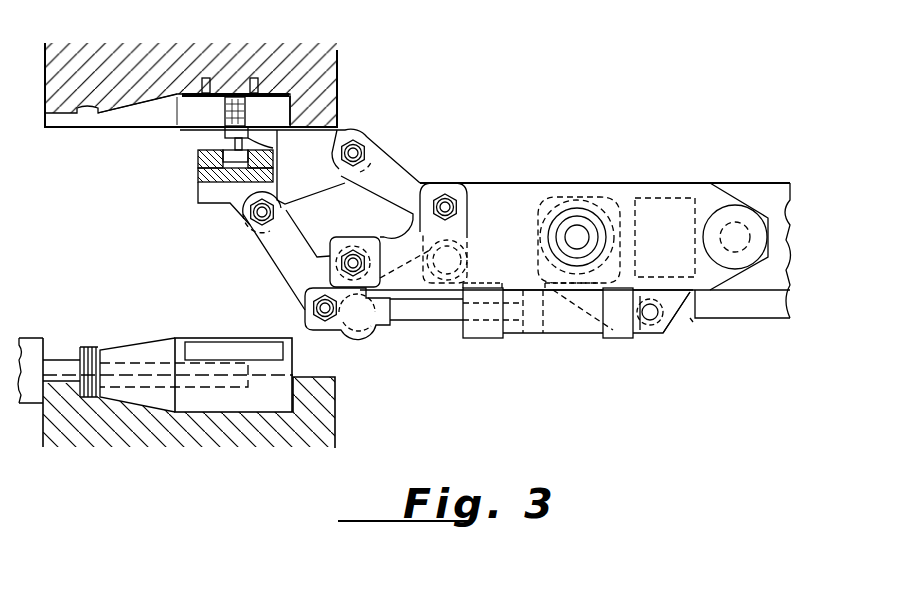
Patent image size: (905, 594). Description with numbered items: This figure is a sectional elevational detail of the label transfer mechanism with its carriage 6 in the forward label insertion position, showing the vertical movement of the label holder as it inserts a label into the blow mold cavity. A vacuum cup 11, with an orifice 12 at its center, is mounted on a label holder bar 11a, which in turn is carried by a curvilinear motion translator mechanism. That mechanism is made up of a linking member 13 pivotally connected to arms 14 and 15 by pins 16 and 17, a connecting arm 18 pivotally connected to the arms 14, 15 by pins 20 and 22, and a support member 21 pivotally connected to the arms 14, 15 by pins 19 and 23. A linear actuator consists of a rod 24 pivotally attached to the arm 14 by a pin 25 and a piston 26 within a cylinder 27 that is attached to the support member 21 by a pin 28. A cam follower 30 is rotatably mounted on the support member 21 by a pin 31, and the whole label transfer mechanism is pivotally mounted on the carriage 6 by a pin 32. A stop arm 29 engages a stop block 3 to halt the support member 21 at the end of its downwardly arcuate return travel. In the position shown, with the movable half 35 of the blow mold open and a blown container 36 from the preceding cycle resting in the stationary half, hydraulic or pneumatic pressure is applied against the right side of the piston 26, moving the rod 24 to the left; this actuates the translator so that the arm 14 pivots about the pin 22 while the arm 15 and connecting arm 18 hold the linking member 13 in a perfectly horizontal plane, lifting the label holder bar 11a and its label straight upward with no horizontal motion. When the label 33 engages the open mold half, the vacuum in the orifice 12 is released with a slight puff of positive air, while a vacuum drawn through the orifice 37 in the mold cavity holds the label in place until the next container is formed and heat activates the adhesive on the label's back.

The stop block 3 is at (657, 208).
The carriage 6 is at (788, 320).
The vacuum cup 11 is at (225, 100).
The label holder bar 11a is at (220, 166).
The orifice 12 is at (226, 150).
The linking member 13 is at (320, 146).
The arm 14 is at (273, 247).
The arm 15 is at (388, 183).
The pin 16 is at (260, 214).
The pin 17 is at (356, 152).
The connecting arm 18 is at (408, 305).
The pin 19 is at (353, 255).
The pin 20 is at (453, 262).
The support member 21 is at (492, 198).
The pin 22 is at (357, 324).
The pin 23 is at (447, 204).
The rod 24 is at (445, 318).
The pin 25 is at (316, 308).
The piston 26 is at (520, 335).
The cylinder 27 is at (557, 318).
The pin 28 is at (652, 314).
The stop arm 29 is at (691, 318).
The cam follower 30 is at (721, 212).
The pin 31 is at (738, 243).
The pin 32 is at (577, 234).
The label 33 is at (282, 96).
The movable half of the blow mold 35 is at (338, 54).
The blown container 36 is at (225, 398).
The orifice 37 is at (253, 78).